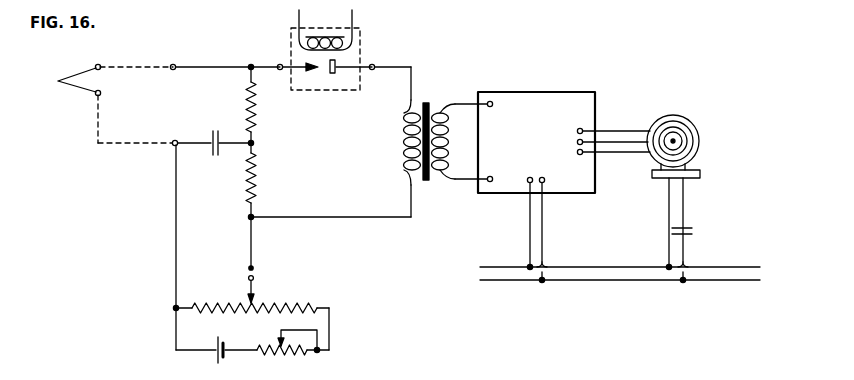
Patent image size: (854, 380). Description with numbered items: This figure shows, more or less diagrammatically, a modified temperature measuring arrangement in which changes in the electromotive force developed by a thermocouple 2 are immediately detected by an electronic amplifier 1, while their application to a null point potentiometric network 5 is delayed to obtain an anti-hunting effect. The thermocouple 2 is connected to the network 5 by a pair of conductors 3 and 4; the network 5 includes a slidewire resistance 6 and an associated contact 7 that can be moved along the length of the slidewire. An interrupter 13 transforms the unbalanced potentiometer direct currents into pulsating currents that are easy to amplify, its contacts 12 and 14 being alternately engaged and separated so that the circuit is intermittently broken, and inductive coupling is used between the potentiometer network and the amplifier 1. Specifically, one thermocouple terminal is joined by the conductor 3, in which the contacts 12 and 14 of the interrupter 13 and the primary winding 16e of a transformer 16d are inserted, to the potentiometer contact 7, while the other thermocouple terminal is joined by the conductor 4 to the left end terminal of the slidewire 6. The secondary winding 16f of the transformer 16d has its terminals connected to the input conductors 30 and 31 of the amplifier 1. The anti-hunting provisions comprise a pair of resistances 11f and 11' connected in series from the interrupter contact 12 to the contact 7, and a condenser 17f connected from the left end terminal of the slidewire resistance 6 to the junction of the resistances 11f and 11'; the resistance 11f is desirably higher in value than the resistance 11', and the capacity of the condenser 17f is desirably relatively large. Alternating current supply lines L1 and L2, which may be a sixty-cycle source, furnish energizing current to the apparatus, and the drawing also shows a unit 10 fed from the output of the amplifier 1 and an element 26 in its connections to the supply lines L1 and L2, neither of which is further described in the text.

The electronic amplifier 1 is at (545, 97).
The thermocouple 2 is at (78, 74).
The conductor 3 is at (134, 66).
The conductor 4 is at (137, 145).
The null point potentiometric network 5 is at (263, 333).
The slidewire resistance 6 is at (210, 298).
The contact 7 is at (255, 300).
The motor 10 is at (690, 118).
The resistance 11f is at (257, 120).
The resistance 11' is at (268, 178).
The contact 12 is at (317, 72).
The interrupter 13 is at (291, 52).
The contact 14 is at (332, 75).
The transformer 16d is at (429, 105).
The primary winding 16e is at (404, 143).
The secondary winding 16f is at (441, 176).
The condenser 17f is at (215, 129).
The capacitor 26 is at (692, 231).
The input conductor 30 is at (460, 104).
The input conductor 31 is at (470, 181).
The alternating current supply line L1 is at (513, 281).
The alternating current supply line L2 is at (508, 267).